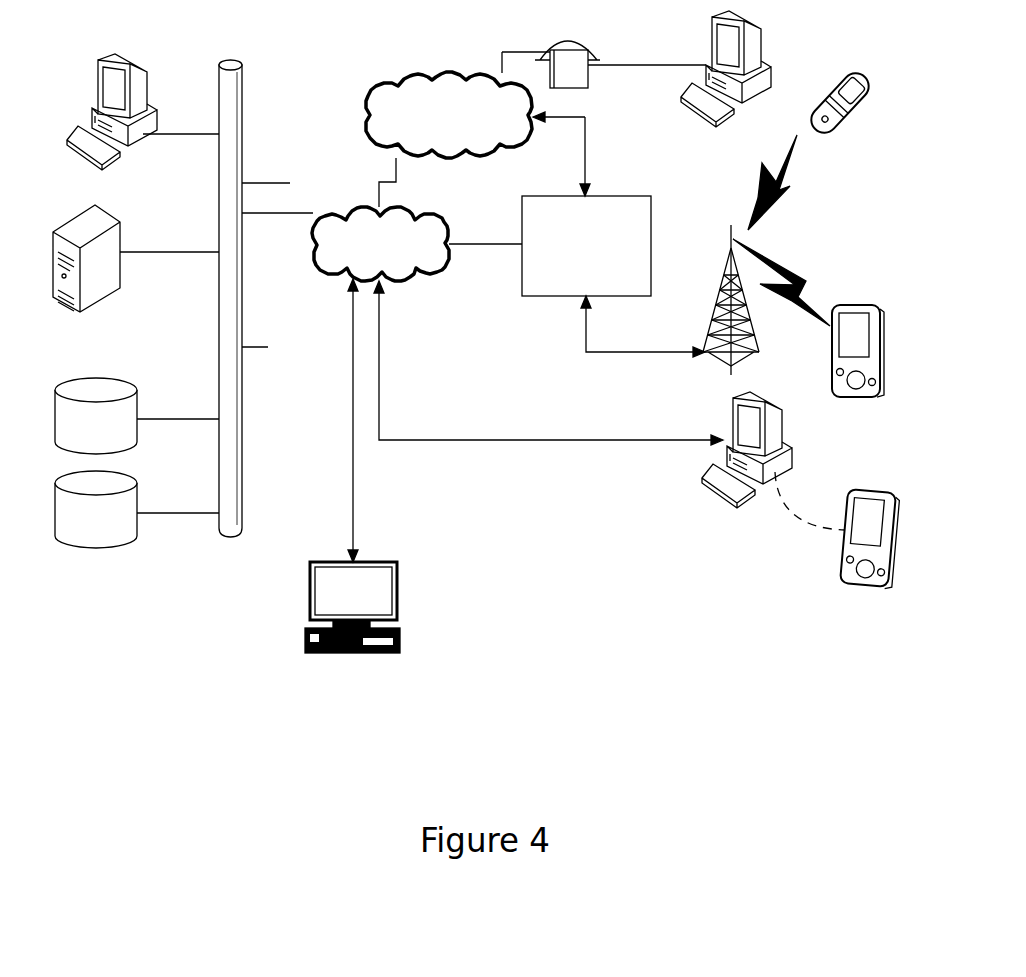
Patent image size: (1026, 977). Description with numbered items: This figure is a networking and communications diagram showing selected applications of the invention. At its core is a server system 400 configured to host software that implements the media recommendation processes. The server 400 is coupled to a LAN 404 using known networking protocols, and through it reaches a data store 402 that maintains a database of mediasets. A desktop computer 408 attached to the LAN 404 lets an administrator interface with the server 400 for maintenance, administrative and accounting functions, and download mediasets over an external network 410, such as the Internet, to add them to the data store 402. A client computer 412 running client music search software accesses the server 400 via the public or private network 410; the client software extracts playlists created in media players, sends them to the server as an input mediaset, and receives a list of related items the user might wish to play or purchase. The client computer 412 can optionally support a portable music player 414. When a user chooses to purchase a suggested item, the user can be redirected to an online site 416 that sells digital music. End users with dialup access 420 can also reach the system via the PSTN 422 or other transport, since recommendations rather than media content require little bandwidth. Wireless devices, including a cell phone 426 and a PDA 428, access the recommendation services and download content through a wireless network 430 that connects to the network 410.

The server system 400 is at (75, 212).
The data store 402 is at (137, 410).
The LAN 404 is at (242, 478).
The desktop computer 408 is at (97, 80).
The external network 410 is at (330, 282).
The client computer 412 is at (722, 488).
The portable music player 414 is at (860, 585).
The online site 416 is at (398, 595).
The dialup access 420 is at (693, 115).
The PSTN 422 is at (405, 73).
The cell phone 426 is at (866, 135).
The PDA 428 is at (853, 398).
The wireless network 430 is at (523, 290).